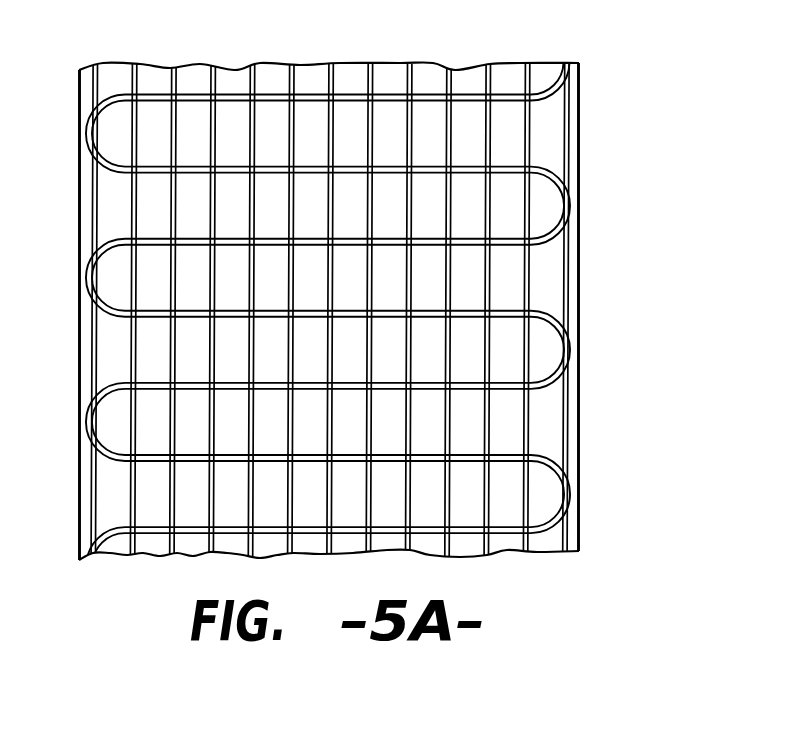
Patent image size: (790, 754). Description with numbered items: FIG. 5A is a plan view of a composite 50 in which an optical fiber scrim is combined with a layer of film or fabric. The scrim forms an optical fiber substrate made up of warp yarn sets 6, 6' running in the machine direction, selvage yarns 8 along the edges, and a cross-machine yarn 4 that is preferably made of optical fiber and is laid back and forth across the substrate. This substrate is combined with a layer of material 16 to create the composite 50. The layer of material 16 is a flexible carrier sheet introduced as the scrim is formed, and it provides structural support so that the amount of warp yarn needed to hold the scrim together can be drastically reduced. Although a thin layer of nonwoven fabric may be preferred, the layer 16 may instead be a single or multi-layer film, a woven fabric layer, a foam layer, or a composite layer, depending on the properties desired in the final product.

The composite 50 is at (616, 154).
The cross-machine yarn 4 is at (550, 310).
The warp yarn set 6 is at (330, 284).
The warp yarn set 6' is at (430, 284).
The selvage yarns 8 is at (565, 253).
The layer of material 16 is at (582, 384).